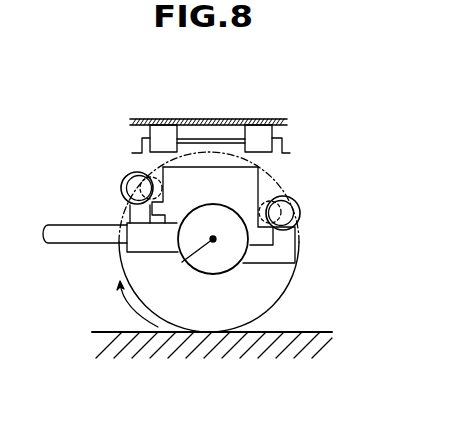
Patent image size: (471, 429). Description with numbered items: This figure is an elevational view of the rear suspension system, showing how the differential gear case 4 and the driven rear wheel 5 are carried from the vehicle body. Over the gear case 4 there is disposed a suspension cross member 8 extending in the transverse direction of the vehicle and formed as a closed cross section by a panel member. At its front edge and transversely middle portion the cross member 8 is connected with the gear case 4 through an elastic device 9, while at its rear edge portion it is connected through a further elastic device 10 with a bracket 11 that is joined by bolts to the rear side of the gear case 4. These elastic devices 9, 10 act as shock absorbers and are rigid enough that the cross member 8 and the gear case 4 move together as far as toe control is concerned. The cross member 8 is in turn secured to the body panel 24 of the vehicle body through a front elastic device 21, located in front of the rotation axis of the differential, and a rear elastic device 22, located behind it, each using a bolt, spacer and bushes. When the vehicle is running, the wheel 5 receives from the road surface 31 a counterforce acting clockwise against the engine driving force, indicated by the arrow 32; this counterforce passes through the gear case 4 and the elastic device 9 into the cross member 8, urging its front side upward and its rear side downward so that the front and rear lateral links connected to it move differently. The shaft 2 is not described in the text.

The shaft 2 is at (78, 240).
The differential gear case 4 is at (246, 218).
The rear wheel 5 is at (303, 248).
The suspension cross member 8 is at (222, 167).
The elastic device 9 is at (121, 190).
The elastic device 10 is at (300, 208).
The bracket 11 is at (289, 283).
The front elastic device 21 is at (155, 137).
The rear elastic device 22 is at (268, 132).
The body panel 24 is at (223, 118).
The road surface 31 is at (323, 332).
The rotation direction 32 is at (128, 304).